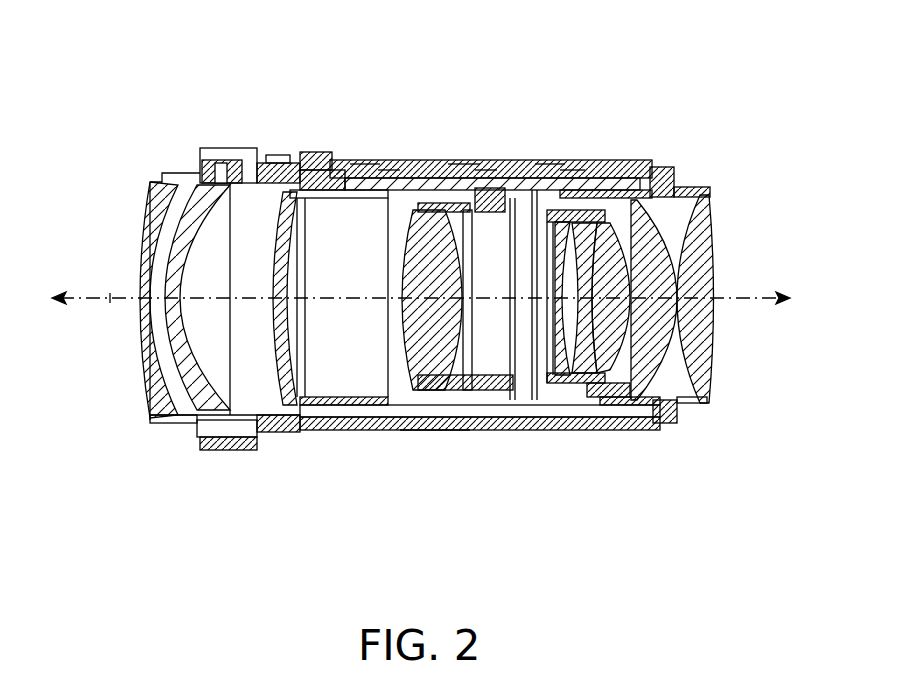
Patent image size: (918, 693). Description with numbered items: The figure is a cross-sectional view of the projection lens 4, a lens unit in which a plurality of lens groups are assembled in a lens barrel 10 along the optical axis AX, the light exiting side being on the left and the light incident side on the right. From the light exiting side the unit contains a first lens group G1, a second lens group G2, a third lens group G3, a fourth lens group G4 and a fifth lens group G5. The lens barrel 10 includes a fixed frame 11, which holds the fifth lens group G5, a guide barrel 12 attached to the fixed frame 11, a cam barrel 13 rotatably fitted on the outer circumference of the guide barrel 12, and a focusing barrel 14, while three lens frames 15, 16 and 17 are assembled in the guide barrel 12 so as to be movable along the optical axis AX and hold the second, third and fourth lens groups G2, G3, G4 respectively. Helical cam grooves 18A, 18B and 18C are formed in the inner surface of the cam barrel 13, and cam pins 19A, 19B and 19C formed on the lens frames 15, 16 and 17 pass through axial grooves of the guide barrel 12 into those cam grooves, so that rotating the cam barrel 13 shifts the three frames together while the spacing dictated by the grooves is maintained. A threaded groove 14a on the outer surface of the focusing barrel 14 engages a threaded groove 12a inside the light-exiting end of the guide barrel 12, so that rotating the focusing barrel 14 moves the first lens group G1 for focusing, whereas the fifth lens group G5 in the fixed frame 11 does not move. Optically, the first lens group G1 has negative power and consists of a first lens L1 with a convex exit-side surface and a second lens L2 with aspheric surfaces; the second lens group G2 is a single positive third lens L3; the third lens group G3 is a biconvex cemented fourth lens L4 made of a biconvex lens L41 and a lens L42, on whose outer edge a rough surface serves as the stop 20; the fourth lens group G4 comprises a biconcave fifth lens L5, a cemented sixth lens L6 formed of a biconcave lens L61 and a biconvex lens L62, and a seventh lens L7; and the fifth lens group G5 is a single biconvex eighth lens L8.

The projection lens 4 is at (90, 118).
The lens barrel 10 is at (695, 58).
The fixed frame 11 is at (668, 160).
The guide barrel 12 is at (222, 160).
The threaded groove 12a is at (289, 158).
The cam barrel 13 is at (325, 150).
The focusing barrel 14 is at (173, 172).
The threaded groove 14a is at (276, 186).
The lens frame 15 is at (318, 202).
The lens frame 16 is at (495, 220).
The lens frame 17 is at (607, 163).
The cam groove 18A is at (368, 158).
The cam groove 18B is at (465, 158).
The cam groove 18C is at (551, 158).
The cam pin 19A is at (390, 165).
The cam pin 19B is at (487, 165).
The cam pin 19C is at (573, 165).
The stop 20 is at (436, 432).
The optical axis AX is at (112, 300).
The first lens L1 is at (146, 398).
The second lens L2 is at (186, 402).
The third lens L3 is at (278, 395).
The fourth lens L4 is at (438, 372).
The biconvex lens L41 is at (405, 405).
The lens L42 is at (465, 395).
The fifth lens L5 is at (548, 402).
The sixth lens L6 is at (601, 379).
The biconcave lens L61 is at (576, 397).
The biconvex lens L62 is at (616, 397).
The seventh lens L7 is at (657, 400).
The eighth lens L8 is at (718, 385).
The first lens group G1 is at (163, 372).
The second lens group G2 is at (283, 377).
The third lens group G3 is at (438, 386).
The fourth lens group G4 is at (601, 383).
The fifth lens group G5 is at (712, 378).